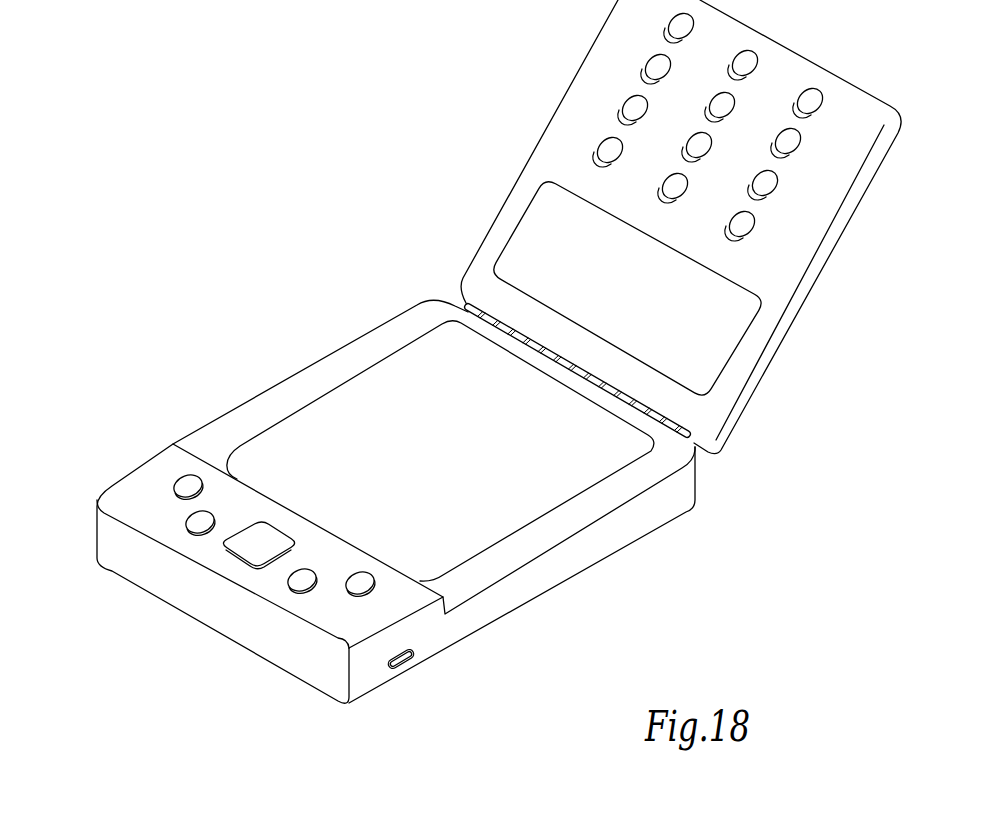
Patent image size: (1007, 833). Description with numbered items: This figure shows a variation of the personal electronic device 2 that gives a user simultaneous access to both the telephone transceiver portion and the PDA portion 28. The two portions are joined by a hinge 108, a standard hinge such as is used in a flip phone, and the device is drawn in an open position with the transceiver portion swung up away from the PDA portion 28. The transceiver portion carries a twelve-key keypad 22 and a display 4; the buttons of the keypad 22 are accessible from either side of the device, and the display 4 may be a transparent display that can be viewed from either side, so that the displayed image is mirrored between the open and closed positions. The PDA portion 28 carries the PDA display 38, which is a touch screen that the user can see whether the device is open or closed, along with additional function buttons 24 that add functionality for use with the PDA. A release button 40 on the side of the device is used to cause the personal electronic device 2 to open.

The personal electronic device 2 is at (298, 253).
The display 4 is at (537, 213).
The keypad 22 is at (670, 30).
The function buttons 24 is at (357, 590).
The PDA portion 28 is at (223, 442).
The PDA display 38 is at (353, 403).
The release button 40 is at (400, 668).
The hinge 108 is at (481, 305).